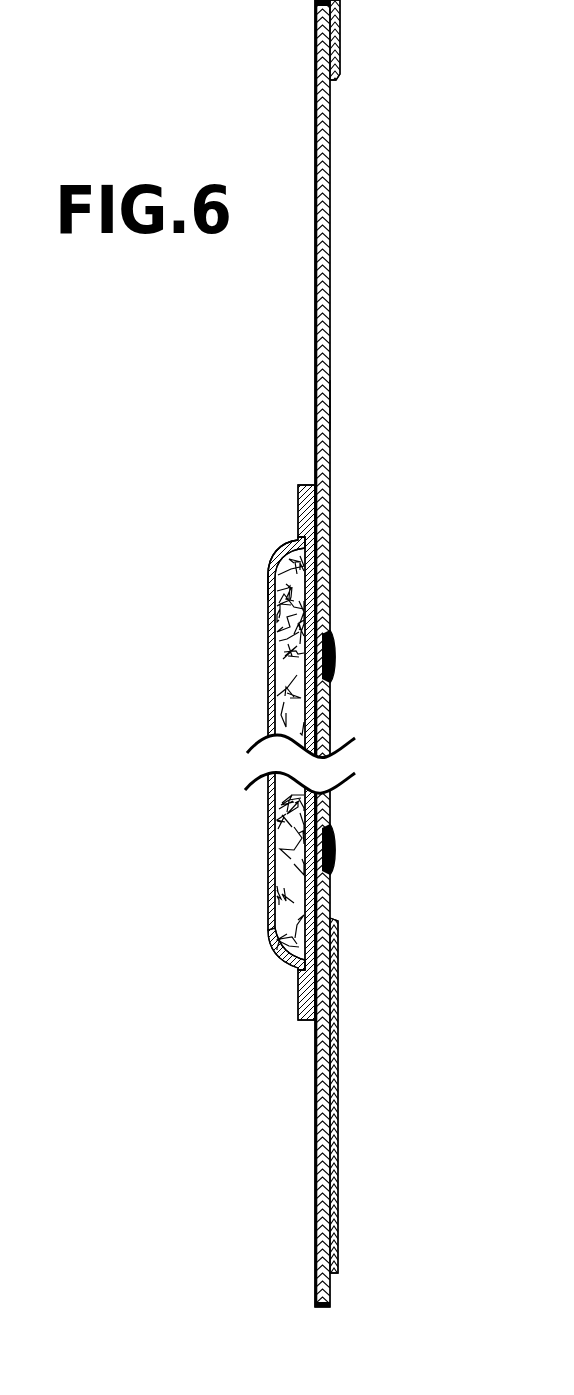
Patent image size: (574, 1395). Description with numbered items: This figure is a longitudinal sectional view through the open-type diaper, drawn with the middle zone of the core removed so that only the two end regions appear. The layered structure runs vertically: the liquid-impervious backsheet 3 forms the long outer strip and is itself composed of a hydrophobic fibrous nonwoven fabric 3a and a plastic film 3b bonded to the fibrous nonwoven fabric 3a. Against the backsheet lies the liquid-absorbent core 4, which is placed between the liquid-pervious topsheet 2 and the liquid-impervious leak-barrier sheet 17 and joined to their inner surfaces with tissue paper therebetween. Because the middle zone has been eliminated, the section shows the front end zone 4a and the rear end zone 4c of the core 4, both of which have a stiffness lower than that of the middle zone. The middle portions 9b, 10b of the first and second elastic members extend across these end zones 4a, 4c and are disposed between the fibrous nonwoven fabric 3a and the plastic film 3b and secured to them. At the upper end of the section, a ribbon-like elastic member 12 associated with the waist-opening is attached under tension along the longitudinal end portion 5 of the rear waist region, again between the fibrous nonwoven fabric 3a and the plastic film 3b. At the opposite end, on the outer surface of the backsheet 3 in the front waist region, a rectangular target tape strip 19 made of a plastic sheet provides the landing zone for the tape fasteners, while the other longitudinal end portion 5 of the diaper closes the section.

The liquid-pervious topsheet 2 is at (268, 626).
The liquid-impervious backsheet 3 is at (330, 455).
The hydrophobic fibrous nonwoven fabric 3a is at (330, 402).
The plastic film 3b is at (330, 535).
The liquid-absorbent core 4 is at (290, 686).
The front end zone of the core 4a is at (292, 910).
The rear end zone of the core 4c is at (268, 569).
The longitudinal end portion 5 is at (316, 3).
The middle portion of the first elastic member 9b is at (338, 851).
The middle portion of the second elastic member 10b is at (338, 672).
The ribbon-like elastic member 12 is at (331, 28).
The liquid-impervious leak-barrier sheet 17 is at (330, 713).
The rectangular target tape strip 19 is at (338, 1127).